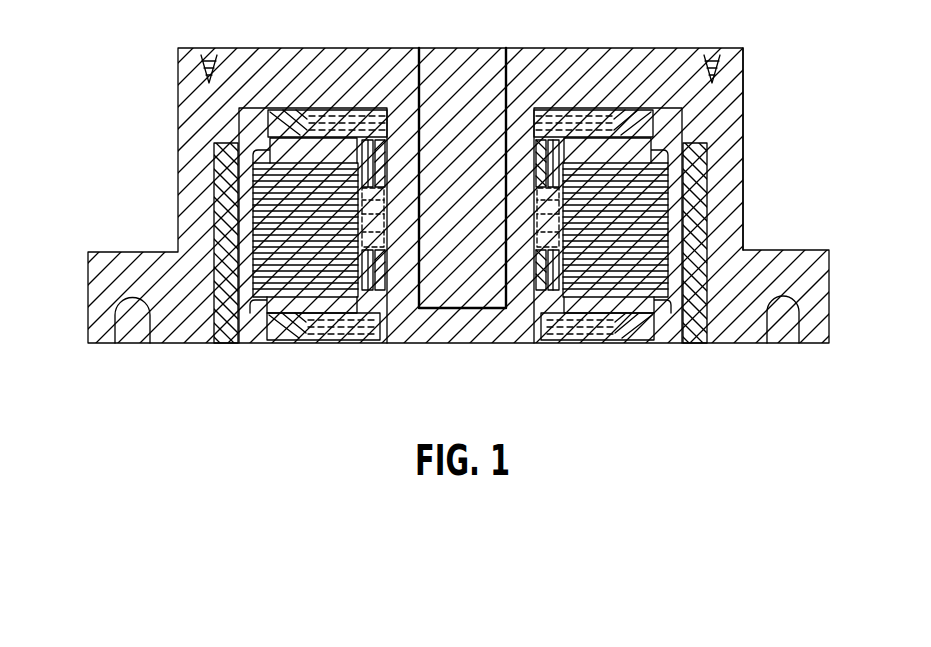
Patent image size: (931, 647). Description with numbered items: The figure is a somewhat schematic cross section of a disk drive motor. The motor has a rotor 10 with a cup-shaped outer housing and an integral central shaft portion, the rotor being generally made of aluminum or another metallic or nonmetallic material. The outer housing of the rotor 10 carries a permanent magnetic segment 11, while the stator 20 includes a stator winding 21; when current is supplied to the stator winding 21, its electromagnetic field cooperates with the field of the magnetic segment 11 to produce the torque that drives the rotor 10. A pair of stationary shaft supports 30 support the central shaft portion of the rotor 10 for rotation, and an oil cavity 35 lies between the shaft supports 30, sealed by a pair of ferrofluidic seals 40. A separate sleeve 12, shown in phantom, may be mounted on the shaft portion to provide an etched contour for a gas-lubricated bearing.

The rotor 10 is at (580, 87).
The magnetic segment 11 is at (217, 212).
The sleeve 12 is at (400, 195).
The stator 20 is at (633, 143).
The stator winding 21 is at (712, 198).
The stationary shaft support 30 is at (393, 137).
The oil cavity 35 is at (530, 230).
The ferrofluidic seal 40 is at (293, 108).